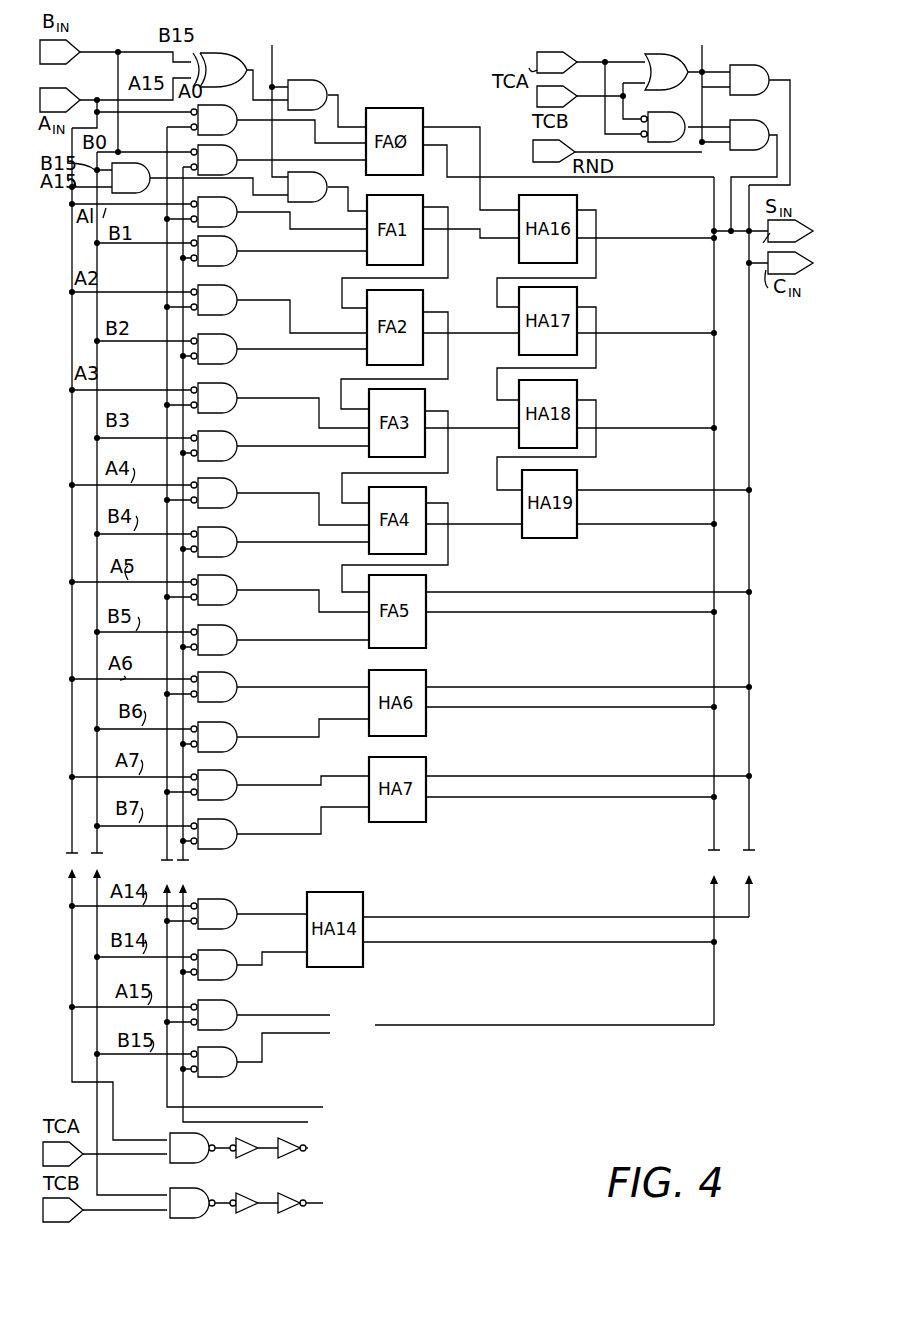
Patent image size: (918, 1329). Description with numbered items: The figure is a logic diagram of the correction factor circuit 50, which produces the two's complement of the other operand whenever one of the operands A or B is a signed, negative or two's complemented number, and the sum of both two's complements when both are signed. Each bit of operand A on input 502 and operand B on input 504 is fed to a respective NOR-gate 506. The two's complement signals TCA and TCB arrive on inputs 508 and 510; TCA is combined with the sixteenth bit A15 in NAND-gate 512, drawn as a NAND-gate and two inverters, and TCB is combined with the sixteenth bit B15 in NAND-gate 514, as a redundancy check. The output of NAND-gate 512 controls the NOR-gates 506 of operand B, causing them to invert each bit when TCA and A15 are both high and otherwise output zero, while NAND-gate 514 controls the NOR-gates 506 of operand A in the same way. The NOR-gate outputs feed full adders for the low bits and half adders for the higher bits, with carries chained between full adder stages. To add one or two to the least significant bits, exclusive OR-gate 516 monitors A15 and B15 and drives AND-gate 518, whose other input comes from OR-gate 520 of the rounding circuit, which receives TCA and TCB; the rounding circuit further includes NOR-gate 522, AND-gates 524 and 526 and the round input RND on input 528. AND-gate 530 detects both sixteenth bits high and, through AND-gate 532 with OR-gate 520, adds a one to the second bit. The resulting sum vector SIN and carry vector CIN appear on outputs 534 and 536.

The correction factor circuit 50 is at (516, 1060).
The input for operand A 502 is at (62, 101).
The input for operand B 504 is at (78, 48).
The NOR-gate 506 is at (237, 1069).
The input for two's complement signal TCA 508 is at (83, 1143).
The input for two's complement signal TCB 510 is at (78, 1212).
The NAND-gate 512 is at (231, 1168).
The NAND-gate 514 is at (301, 1212).
The exclusive OR-gate 516 is at (220, 60).
The AND-gate 518 is at (310, 86).
The OR-gate 520 is at (689, 94).
The NOR-gate 522 is at (670, 132).
The AND-gate 524 is at (779, 57).
The AND-gate 526 is at (766, 118).
The round input 528 is at (527, 150).
The AND-gate 530 is at (140, 165).
The AND-gate 532 is at (316, 196).
The sum vector output 534 is at (766, 236).
The carry vector output 536 is at (785, 286).